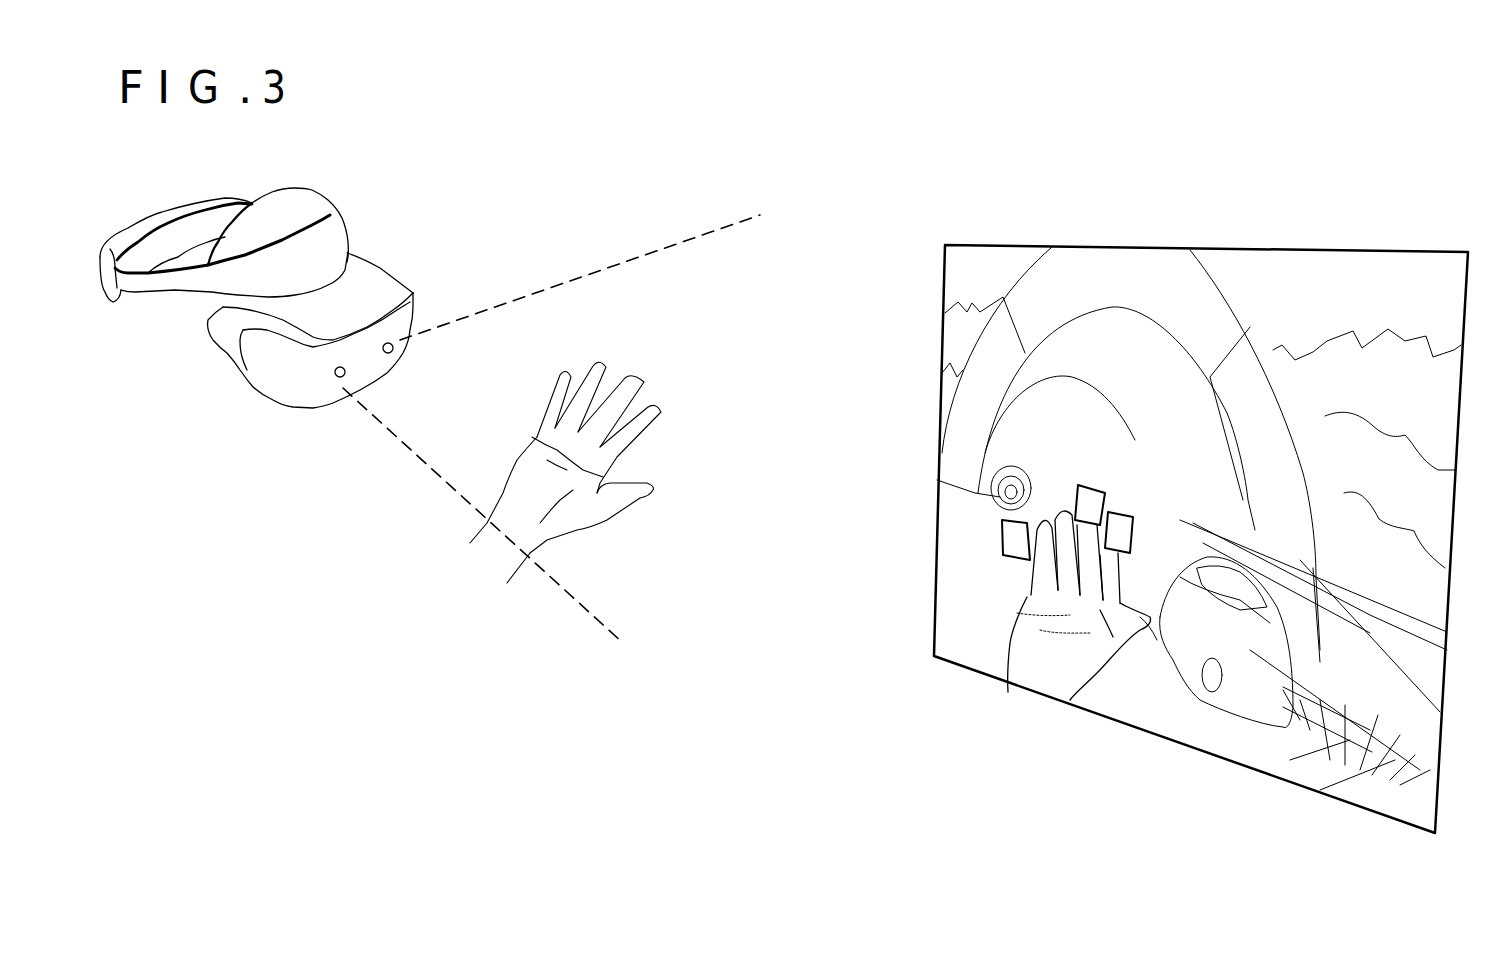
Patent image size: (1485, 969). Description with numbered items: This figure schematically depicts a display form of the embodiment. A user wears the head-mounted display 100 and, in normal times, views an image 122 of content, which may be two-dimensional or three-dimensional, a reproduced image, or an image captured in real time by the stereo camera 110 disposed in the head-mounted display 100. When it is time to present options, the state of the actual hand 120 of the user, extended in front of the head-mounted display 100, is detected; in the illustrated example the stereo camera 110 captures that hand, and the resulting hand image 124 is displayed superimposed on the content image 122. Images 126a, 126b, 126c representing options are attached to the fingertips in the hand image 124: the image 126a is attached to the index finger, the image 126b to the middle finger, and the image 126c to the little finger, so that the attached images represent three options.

The head-mounted display 100 is at (312, 197).
The stereo camera 110 is at (388, 353).
The actual hand 120 is at (643, 370).
The image 122 is at (1297, 247).
The hand image 124 is at (1043, 662).
The image 126a is at (1133, 513).
The image 126b is at (1090, 485).
The image 126c is at (1002, 530).